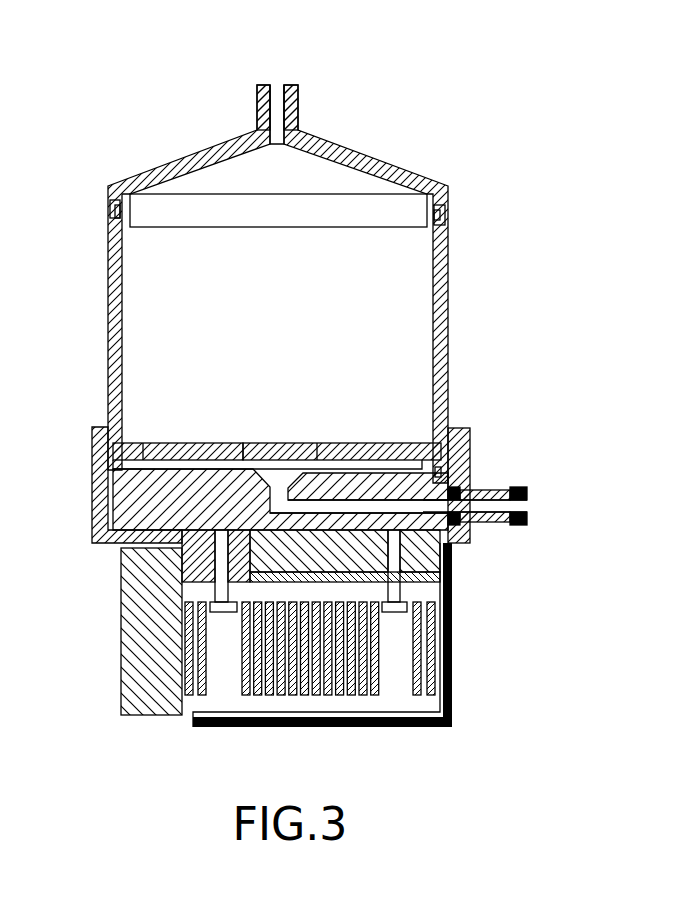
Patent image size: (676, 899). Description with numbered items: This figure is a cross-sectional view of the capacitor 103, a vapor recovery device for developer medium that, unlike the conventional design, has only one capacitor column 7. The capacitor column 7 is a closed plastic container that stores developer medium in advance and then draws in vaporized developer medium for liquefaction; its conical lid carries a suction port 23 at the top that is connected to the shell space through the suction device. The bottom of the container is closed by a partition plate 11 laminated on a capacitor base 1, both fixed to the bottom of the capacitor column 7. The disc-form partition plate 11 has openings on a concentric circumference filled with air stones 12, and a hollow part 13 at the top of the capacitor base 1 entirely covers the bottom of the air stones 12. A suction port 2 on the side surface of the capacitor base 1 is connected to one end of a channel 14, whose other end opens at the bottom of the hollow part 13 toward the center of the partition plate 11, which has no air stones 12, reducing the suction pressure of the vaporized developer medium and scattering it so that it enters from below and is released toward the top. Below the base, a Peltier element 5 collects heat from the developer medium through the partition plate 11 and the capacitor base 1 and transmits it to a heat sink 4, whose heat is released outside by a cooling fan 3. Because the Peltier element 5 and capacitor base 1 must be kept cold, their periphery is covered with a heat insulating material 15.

The capacitor 103 is at (440, 130).
The capacitor base 1 is at (120, 515).
The suction port 2 is at (527, 508).
The cooling fan 3 is at (120, 590).
The heat sink 4 is at (375, 648).
The Peltier element 5 is at (253, 603).
The capacitor column 7 is at (450, 250).
The partition plate 11 is at (268, 442).
The air stones 12 is at (397, 442).
The hollow part 13 is at (301, 466).
The channel 14 is at (358, 507).
The heat insulating material 15 is at (443, 568).
The suction port 23 is at (277, 85).